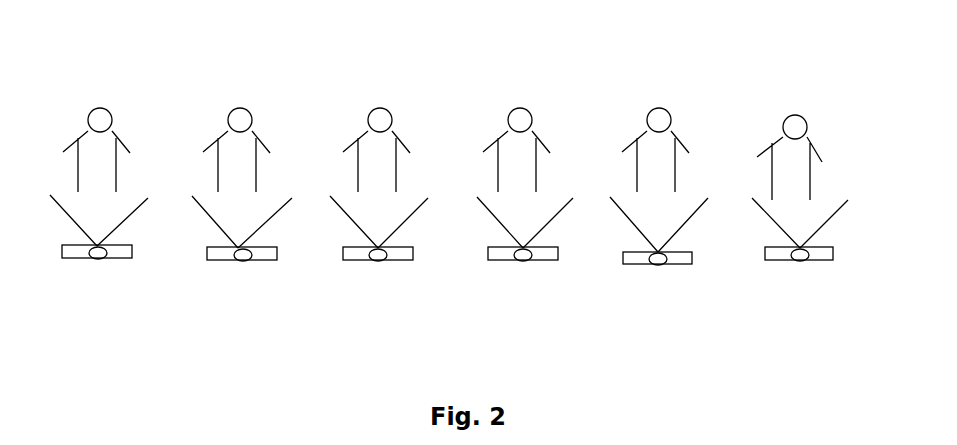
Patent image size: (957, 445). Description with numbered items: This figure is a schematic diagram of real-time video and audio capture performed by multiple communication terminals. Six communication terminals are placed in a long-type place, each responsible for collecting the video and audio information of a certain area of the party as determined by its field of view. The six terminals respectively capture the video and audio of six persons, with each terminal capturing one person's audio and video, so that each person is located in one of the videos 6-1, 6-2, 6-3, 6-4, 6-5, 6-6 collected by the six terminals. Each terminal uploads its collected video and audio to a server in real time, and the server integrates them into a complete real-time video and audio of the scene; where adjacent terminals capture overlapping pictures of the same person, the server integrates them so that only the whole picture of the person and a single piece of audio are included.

The video 6-1 is at (99, 220).
The video 6-2 is at (242, 222).
The video 6-3 is at (379, 222).
The video 6-4 is at (525, 222).
The video 6-5 is at (659, 224).
The video 6-6 is at (800, 223).